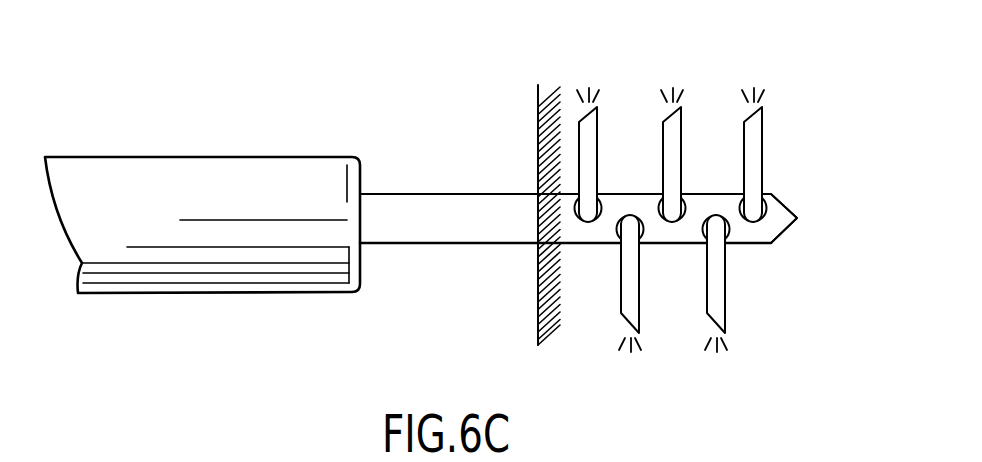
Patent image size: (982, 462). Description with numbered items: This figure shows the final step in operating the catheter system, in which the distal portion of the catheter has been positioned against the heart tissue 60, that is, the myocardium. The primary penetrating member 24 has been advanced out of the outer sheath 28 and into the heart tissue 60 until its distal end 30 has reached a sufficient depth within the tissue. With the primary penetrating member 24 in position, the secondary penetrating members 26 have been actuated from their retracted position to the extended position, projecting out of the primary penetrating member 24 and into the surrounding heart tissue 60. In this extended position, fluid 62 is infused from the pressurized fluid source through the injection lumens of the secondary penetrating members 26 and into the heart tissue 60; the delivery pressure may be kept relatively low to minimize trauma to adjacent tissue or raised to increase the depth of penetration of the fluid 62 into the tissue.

The primary penetrating member 24 is at (450, 245).
The secondary penetrating members 26 is at (764, 157).
The outer sheath 28 is at (188, 293).
The distal end 30 is at (778, 238).
The heart tissue 60 is at (532, 135).
The fluid 62 is at (757, 82).